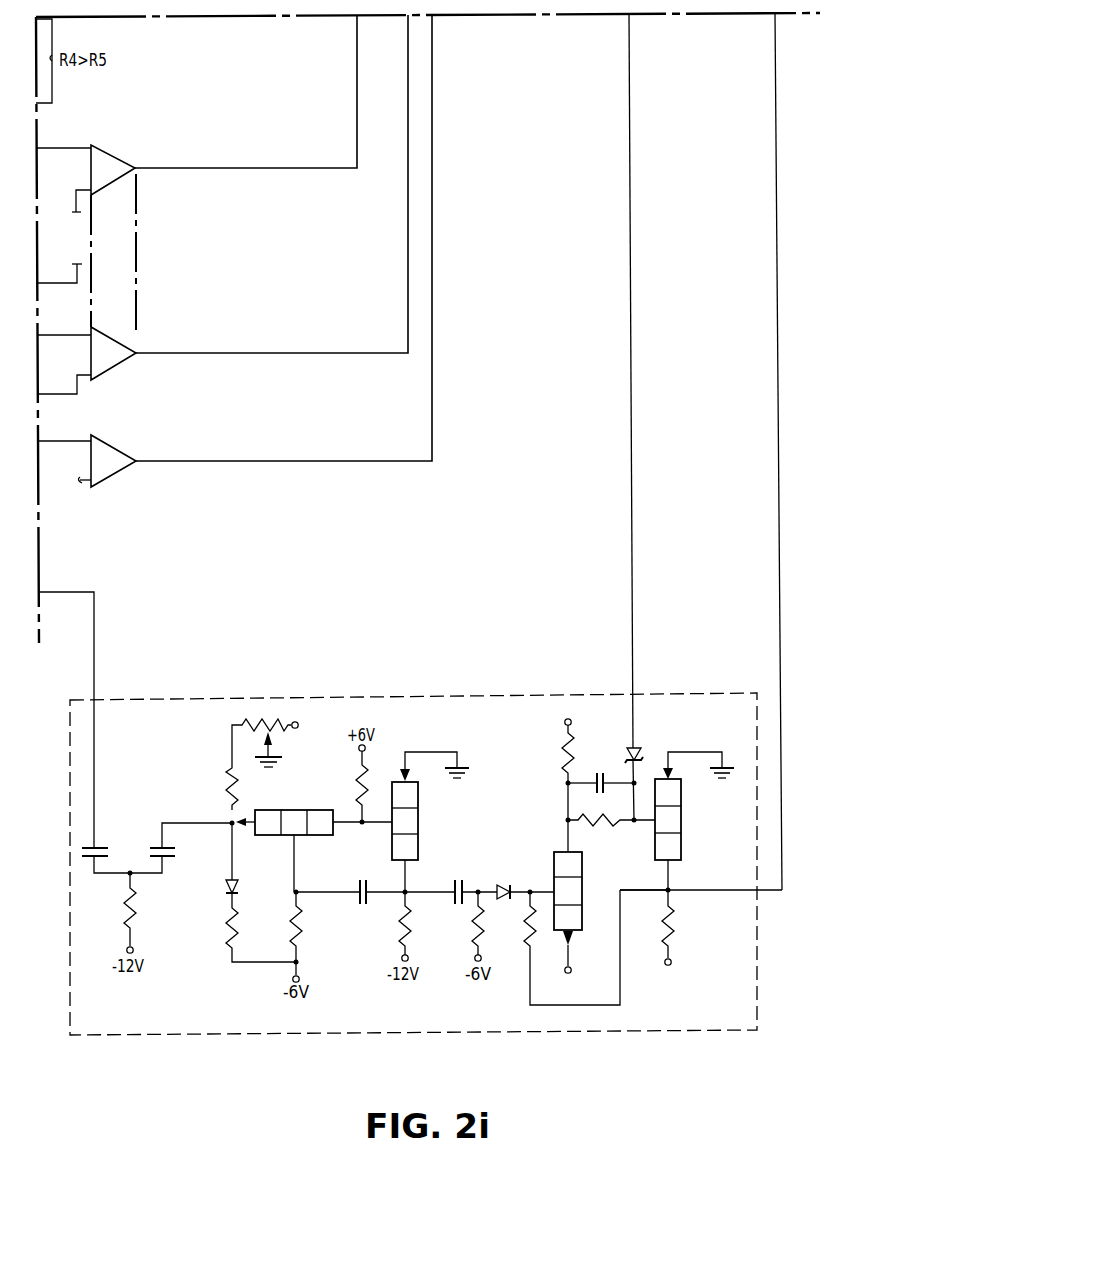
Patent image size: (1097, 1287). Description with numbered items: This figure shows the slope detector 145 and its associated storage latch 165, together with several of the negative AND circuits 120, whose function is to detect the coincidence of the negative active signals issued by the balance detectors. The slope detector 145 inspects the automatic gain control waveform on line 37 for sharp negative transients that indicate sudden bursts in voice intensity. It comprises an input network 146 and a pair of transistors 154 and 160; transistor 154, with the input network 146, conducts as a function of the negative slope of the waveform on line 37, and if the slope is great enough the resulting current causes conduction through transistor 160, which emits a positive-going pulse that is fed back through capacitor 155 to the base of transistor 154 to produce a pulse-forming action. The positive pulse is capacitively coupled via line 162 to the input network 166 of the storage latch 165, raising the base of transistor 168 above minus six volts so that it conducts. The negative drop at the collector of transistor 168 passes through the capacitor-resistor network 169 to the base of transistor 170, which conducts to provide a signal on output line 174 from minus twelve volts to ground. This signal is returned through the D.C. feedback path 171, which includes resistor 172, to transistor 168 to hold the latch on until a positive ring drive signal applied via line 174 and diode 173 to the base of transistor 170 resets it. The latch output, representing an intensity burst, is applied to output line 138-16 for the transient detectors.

The negative AND circuit 120 is at (113, 163).
The line 37 is at (74, 596).
The output line 174 is at (623, 43).
The output line 138-16 is at (770, 50).
The slope detector 145 is at (198, 697).
The input network 146 is at (204, 788).
The transistor 154 is at (306, 810).
The transistor 160 is at (418, 808).
The capacitor 155 is at (355, 898).
The line 162 is at (471, 889).
The input network 166 is at (518, 948).
The resistor 172 is at (534, 948).
The D.C. feedback path 171 is at (645, 892).
The transistor 168 is at (583, 857).
The storage latch 165 is at (529, 809).
The capacitor-resistor network 169 is at (580, 801).
The diode 173 is at (638, 751).
The transistor 170 is at (681, 808).